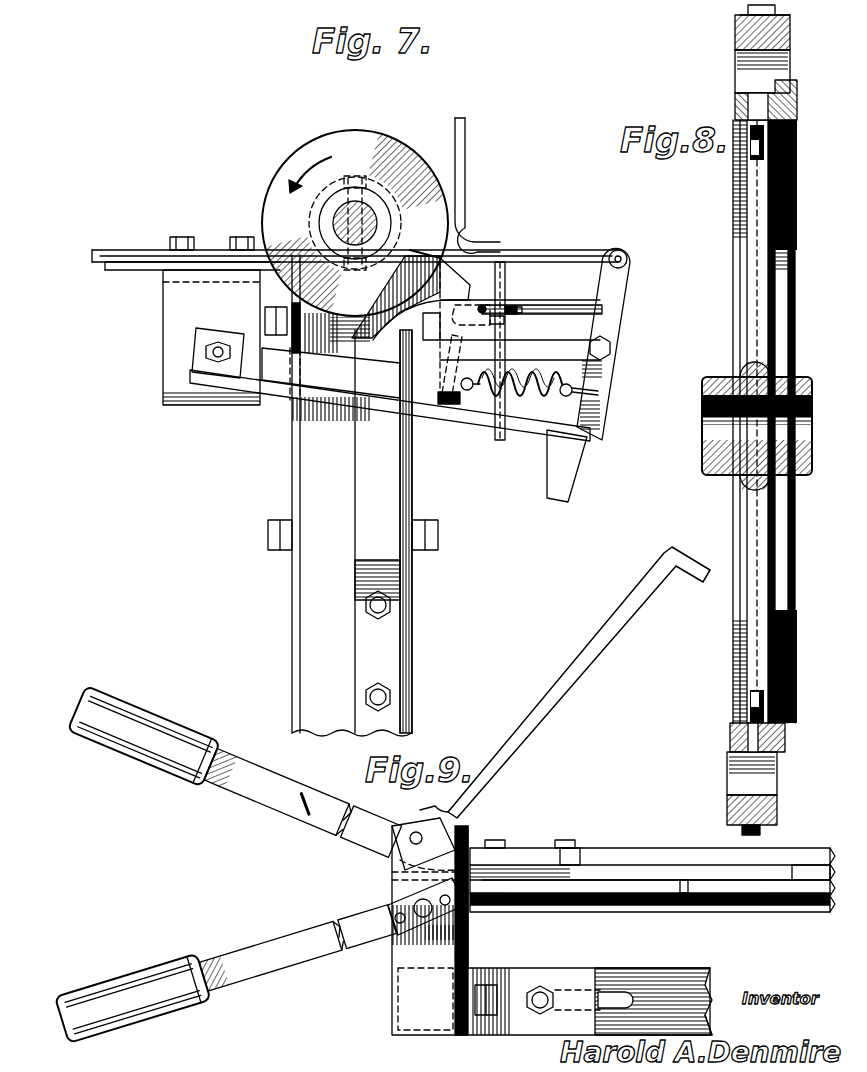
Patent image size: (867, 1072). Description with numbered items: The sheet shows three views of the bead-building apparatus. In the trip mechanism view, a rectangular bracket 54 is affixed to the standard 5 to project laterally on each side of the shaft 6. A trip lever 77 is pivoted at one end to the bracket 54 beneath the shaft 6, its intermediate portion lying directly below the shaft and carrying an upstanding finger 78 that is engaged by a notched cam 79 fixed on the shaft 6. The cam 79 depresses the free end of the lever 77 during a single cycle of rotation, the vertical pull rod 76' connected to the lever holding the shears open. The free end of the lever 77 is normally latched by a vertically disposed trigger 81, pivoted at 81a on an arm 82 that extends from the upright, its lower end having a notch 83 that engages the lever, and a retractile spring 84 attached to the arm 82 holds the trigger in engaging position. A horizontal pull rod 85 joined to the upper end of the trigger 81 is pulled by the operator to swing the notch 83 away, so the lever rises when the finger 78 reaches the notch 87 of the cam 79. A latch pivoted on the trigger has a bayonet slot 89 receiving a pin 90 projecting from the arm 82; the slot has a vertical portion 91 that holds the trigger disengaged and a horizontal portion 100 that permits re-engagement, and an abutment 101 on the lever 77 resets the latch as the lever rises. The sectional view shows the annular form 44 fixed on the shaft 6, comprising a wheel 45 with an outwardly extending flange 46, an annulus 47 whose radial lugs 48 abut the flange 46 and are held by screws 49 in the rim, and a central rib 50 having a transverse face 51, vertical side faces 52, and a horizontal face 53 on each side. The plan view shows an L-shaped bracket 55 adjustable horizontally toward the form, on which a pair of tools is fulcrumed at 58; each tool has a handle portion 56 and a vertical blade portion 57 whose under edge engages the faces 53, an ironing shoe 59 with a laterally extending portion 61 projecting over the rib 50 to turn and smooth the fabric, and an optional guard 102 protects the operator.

In FIG. 7, the standard 5 is at (351, 495).
In FIG. 7, the shaft 6 is at (338, 216).
In FIG. 7, the notched cam 79 is at (408, 142).
In FIG. 7, the vertical pull rod 76' is at (487, 185).
In FIG. 7, the horizontal pull rod 85 is at (104, 256).
In FIG. 7, the bracket 54 is at (112, 272).
In FIG. 9, the bracket 54 is at (712, 1022).
In FIG. 7, the finger 78 is at (310, 375).
In FIG. 7, the notch 87 is at (445, 262).
In FIG. 7, the arm 82 is at (511, 351).
In FIG. 7, the pin 90 is at (482, 305).
In FIG. 7, the bayonet slot 89 is at (512, 306).
In FIG. 7, the vertical portion 91 is at (522, 310).
In FIG. 7, the horizontal portion 100 is at (505, 320).
In FIG. 7, the trigger 81 is at (628, 288).
In FIG. 7, the pivot 81a is at (612, 348).
In FIG. 7, the notch 83 is at (588, 445).
In FIG. 7, the trip lever 77 is at (560, 490).
In FIG. 7, the retractile spring 84 is at (529, 395).
In FIG. 7, the abutment 101 is at (455, 396).
In FIG. 8, the annular form 44 is at (768, 401).
In FIG. 8, the wheel 45 is at (796, 212).
In FIG. 8, the flange 46 is at (798, 82).
In FIG. 8, the annulus 47 is at (734, 35).
In FIG. 8, the radial lugs 48 is at (734, 75).
In FIG. 8, the screws 49 is at (752, 160).
In FIG. 8, the rib 50 is at (776, 10).
In FIG. 8, the transverse face 51 is at (748, 12).
In FIG. 9, the transverse face 51 is at (811, 873).
In FIG. 8, the vertical side faces 52 is at (740, 830).
In FIG. 8, the horizontal face 53 is at (726, 808).
In FIG. 9, the guard 102 is at (516, 724).
In FIG. 9, the handle portion 56 is at (300, 788).
In FIG. 9, the fulcrum 58 is at (455, 830).
In FIG. 9, the L-shaped bracket 55 is at (520, 1035).
In FIG. 9, the blade portion 57 is at (768, 905).
In FIG. 9, the ironing shoe 59 is at (555, 848).
In FIG. 9, the laterally extending portion 61 is at (525, 860).